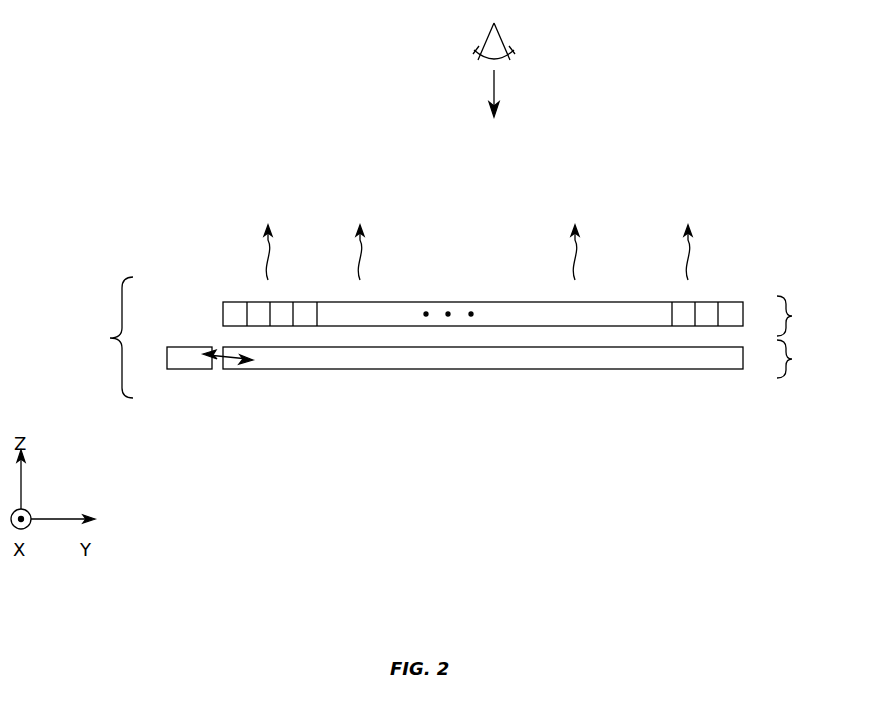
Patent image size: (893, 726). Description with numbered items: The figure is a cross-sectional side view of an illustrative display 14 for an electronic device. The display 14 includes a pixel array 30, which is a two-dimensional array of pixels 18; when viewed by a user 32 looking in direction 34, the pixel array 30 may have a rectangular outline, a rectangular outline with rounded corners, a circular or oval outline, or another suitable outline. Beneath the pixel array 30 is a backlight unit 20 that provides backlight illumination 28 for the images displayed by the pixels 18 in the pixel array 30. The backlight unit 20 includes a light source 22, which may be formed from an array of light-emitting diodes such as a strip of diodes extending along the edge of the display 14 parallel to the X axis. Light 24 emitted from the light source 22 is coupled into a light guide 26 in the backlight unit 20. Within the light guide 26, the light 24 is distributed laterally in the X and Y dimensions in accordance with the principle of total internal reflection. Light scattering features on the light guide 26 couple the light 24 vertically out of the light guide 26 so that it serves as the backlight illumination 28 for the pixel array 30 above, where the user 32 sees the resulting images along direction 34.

The display 14 is at (452, 342).
The pixels 18 is at (283, 312).
The backlight unit 20 is at (489, 398).
The light source 22 is at (192, 362).
The light 24 is at (236, 366).
The light guide 26 is at (320, 372).
The backlight illumination 28 is at (268, 258).
The pixel array 30 is at (522, 282).
The user 32 is at (500, 36).
The direction 34 is at (497, 92).